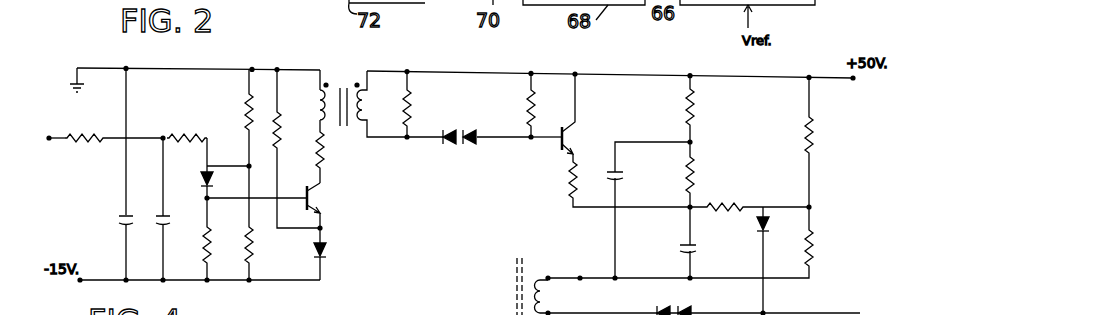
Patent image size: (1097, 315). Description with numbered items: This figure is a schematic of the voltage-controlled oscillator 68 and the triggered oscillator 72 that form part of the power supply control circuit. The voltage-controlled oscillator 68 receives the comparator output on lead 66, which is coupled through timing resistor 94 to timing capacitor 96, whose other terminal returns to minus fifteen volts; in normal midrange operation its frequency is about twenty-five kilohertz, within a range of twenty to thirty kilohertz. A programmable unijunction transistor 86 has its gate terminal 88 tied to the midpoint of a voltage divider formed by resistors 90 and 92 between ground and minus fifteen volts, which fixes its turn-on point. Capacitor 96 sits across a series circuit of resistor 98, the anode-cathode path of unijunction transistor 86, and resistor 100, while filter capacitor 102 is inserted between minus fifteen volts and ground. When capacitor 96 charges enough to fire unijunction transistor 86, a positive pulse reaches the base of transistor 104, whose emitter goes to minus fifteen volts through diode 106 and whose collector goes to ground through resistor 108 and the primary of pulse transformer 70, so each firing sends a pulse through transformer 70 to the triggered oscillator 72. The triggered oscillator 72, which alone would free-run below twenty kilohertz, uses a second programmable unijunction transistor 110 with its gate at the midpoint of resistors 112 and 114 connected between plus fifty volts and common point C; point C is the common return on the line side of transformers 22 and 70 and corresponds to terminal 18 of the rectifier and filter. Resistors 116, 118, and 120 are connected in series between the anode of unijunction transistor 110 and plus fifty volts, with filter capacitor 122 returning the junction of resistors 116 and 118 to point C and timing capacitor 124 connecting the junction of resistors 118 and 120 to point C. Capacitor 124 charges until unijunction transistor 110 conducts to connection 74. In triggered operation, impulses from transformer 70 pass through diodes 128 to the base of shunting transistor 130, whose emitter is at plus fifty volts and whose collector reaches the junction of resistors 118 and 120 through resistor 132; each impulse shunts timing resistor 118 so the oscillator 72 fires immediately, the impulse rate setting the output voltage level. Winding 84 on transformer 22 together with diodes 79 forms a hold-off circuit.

The terminal 18 is at (579, 283).
The transformer 22 is at (515, 268).
The lead 66 is at (55, 141).
The voltage-controlled oscillator 68 is at (203, 97).
The pulse transformer 70 is at (344, 123).
The triggered oscillator 72 is at (763, 127).
The connection 74 is at (817, 313).
The diodes 79 is at (676, 303).
The winding 84 is at (535, 276).
The programmable unijunction transistor 86 is at (202, 180).
The gate terminal 88 is at (217, 164).
The resistor 90 is at (247, 127).
The resistor 92 is at (253, 243).
The timing resistor 94 is at (114, 152).
The timing capacitor 96 is at (158, 218).
The resistor 98 is at (182, 135).
The resistor 100 is at (214, 240).
The filter capacitor 102 is at (118, 228).
The transistor 104 is at (325, 193).
The diode 106 is at (327, 256).
The resistor 108 is at (317, 160).
The programmable unijunction transistor 110 is at (766, 212).
The resistor 112 is at (814, 121).
The resistor 114 is at (814, 239).
The resistor 116 is at (683, 107).
The timing resistor 118 is at (695, 177).
The resistor 120 is at (734, 214).
The filter capacitor 122 is at (619, 181).
The timing capacitor 124 is at (674, 250).
The diodes 128 is at (466, 162).
The shunting transistor 130 is at (557, 143).
The resistor 132 is at (567, 180).